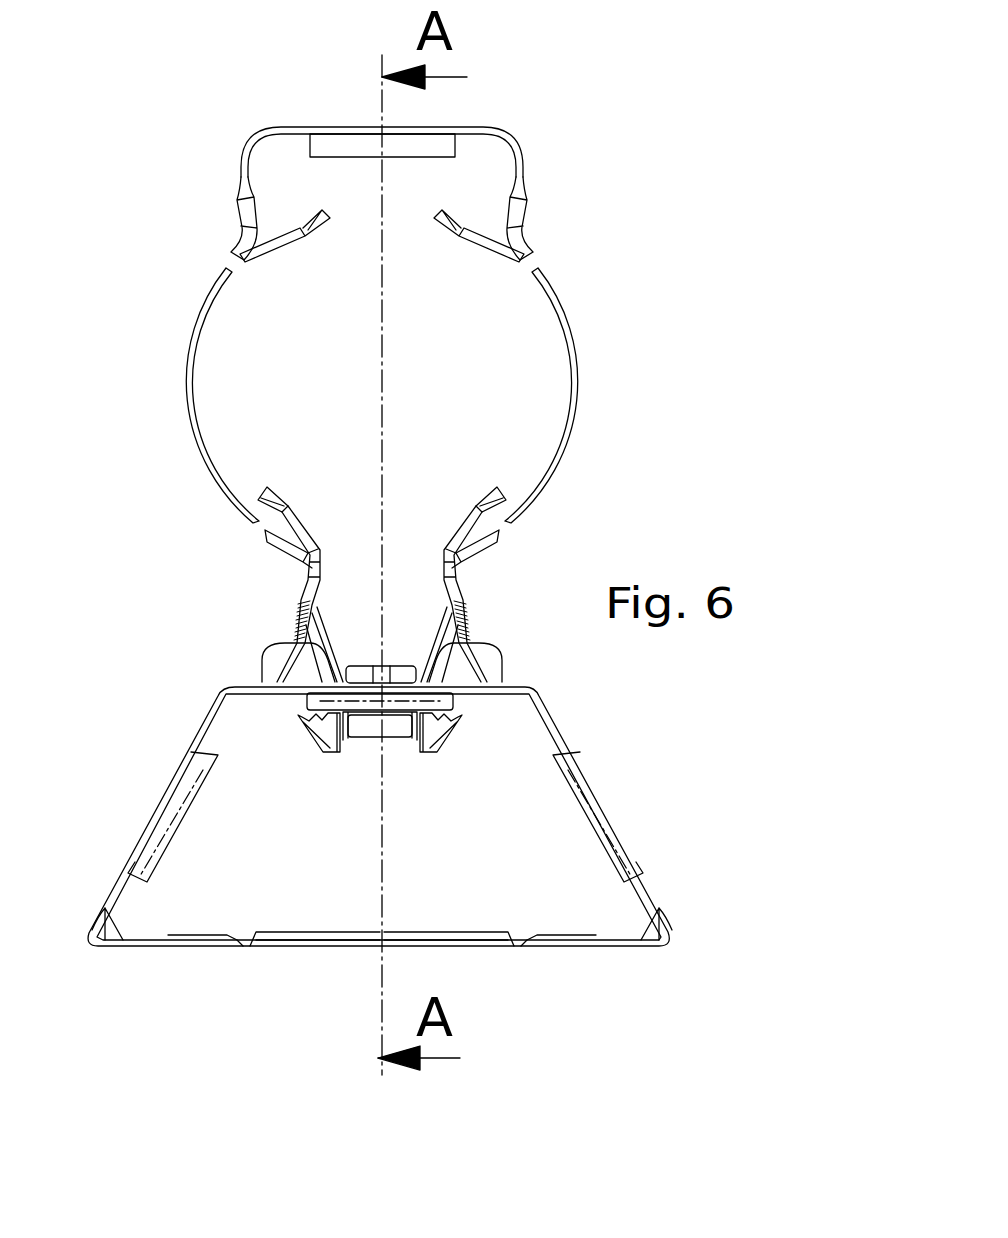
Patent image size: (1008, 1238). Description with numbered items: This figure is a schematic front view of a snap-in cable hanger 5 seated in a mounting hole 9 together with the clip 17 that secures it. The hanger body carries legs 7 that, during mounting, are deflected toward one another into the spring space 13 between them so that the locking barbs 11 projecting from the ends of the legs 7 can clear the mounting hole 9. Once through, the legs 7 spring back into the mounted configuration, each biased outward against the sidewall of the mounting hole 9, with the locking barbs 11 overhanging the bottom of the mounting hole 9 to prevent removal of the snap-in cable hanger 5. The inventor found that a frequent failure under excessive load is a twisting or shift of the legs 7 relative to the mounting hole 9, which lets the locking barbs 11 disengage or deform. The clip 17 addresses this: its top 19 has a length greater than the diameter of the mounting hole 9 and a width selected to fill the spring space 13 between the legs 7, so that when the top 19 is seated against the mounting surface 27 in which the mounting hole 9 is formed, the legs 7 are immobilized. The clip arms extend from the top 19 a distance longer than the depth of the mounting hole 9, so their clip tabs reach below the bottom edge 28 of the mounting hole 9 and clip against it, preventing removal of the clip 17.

The snap-in cable hanger 5 is at (213, 290).
The leg 7 is at (423, 732).
The mounting hole 9 is at (338, 147).
The locking barb 11 is at (317, 725).
The spring space 13 is at (372, 654).
The clip 17 is at (450, 635).
The top 19 is at (360, 675).
The mounting surface 27 is at (313, 683).
The bottom edge 28 is at (423, 157).